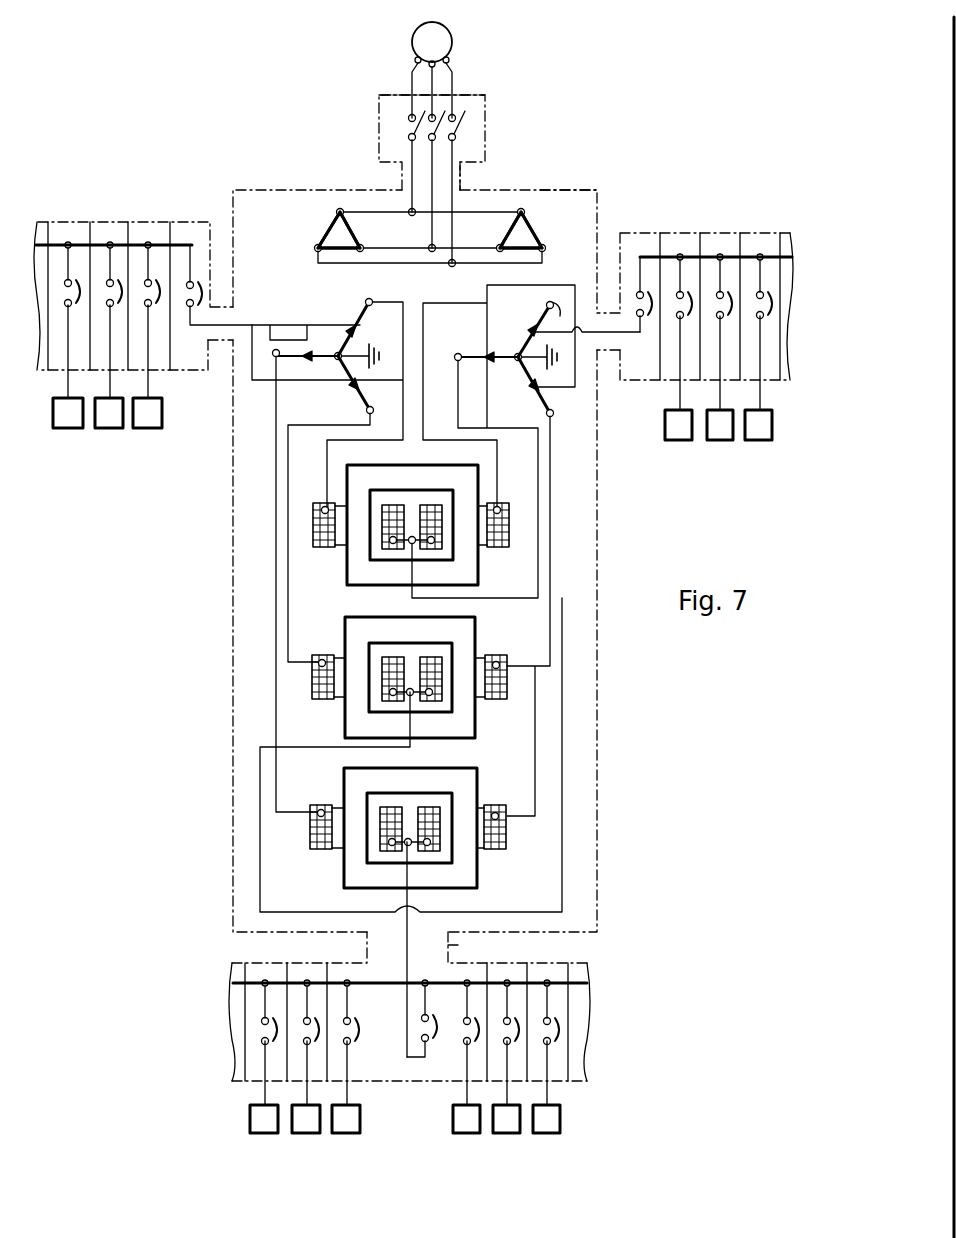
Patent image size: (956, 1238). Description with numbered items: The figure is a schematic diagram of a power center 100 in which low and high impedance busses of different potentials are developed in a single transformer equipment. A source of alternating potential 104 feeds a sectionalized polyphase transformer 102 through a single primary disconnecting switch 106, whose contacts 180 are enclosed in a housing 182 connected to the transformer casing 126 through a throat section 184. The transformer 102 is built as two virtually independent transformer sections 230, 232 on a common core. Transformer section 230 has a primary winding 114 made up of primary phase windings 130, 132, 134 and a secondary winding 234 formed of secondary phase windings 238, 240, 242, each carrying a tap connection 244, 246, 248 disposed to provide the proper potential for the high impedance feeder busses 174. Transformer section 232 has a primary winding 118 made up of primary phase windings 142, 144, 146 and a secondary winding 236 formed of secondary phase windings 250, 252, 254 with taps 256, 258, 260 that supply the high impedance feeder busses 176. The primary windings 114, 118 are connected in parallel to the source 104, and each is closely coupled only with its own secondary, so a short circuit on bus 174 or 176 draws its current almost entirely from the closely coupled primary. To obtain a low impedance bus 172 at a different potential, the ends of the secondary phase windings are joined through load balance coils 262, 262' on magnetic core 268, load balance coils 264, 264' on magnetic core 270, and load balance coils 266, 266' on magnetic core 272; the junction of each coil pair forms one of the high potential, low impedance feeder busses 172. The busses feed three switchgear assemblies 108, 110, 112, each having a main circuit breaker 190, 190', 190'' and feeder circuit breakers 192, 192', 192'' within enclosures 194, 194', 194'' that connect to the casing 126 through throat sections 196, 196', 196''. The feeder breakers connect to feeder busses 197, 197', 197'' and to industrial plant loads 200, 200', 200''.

The power center 100 is at (603, 143).
The sectionalized polyphase transformer 102 is at (245, 223).
The source of alternating potential 104 is at (453, 36).
The primary disconnecting switch 106 is at (489, 143).
The secondary switchgear assembly 108 is at (128, 216).
The secondary switchgear assembly 110 is at (379, 1116).
The secondary switchgear assembly 112 is at (714, 226).
The primary winding 114 is at (297, 216).
The primary winding 118 is at (533, 223).
The transformer casing 126 is at (543, 191).
The primary phase winding 130 is at (321, 237).
The primary phase winding 132 is at (352, 230).
The primary phase winding 134 is at (334, 253).
The primary phase winding 142 is at (506, 240).
The primary phase winding 144 is at (539, 233).
The primary phase winding 146 is at (519, 254).
The low impedance feeder busses 172 is at (416, 913).
The high impedance feeder busses 174 is at (278, 333).
The high impedance feeder busses 176 is at (580, 332).
The contacts 180 is at (414, 128).
The housing 182 is at (486, 99).
The throat section 184 is at (462, 188).
The main circuit breaker 190 is at (180, 300).
The feeder circuit breakers 192 is at (108, 297).
The enclosure 194 is at (114, 219).
The throat section 196 is at (207, 367).
The feeder busses 197 is at (102, 351).
The industrial plant loads 200 is at (107, 433).
The enclosure 194'' is at (711, 229).
The main circuit breaker 190'' is at (629, 310).
The feeder circuit breakers 192'' is at (718, 308).
The throat section 196'' is at (608, 376).
The feeder busses 197'' is at (720, 363).
The industrial plant loads 200'' is at (718, 442).
The enclosure 194' is at (410, 960).
The throat section 196' is at (473, 950).
The main circuit breaker 190' is at (409, 1029).
The feeder circuit breakers 192' is at (411, 1024).
The feeder busses 197' is at (399, 1073).
The industrial plant loads 200' is at (405, 1139).
The transformer section 230 is at (315, 423).
The transformer section 232 is at (490, 426).
The secondary winding 234 is at (359, 344).
The secondary winding 236 is at (492, 351).
The secondary phase winding 238 is at (290, 373).
The secondary phase winding 240 is at (366, 304).
The secondary phase winding 242 is at (366, 398).
The tap connection 244 is at (316, 354).
The tap connection 246 is at (357, 319).
The tap connection 248 is at (351, 386).
The secondary phase winding 250 is at (462, 356).
The secondary phase winding 252 is at (548, 301).
The secondary phase winding 254 is at (557, 400).
The tap 256 is at (490, 362).
The tap 258 is at (534, 333).
The tap 260 is at (533, 396).
The load balance coil 262 is at (319, 542).
The load balance coil 262' is at (504, 543).
The load balance coil 264 is at (317, 694).
The load balance coil 264' is at (502, 697).
The load balance coil 266 is at (316, 844).
The load balance coil 266' is at (503, 846).
The magnetic core 268 is at (412, 466).
The magnetic core 270 is at (412, 617).
The magnetic core 272 is at (412, 769).